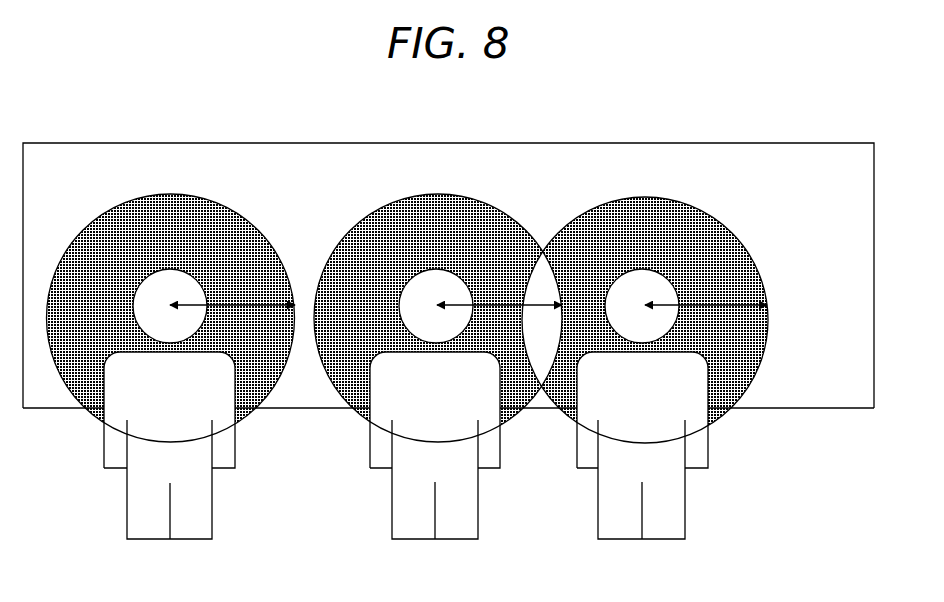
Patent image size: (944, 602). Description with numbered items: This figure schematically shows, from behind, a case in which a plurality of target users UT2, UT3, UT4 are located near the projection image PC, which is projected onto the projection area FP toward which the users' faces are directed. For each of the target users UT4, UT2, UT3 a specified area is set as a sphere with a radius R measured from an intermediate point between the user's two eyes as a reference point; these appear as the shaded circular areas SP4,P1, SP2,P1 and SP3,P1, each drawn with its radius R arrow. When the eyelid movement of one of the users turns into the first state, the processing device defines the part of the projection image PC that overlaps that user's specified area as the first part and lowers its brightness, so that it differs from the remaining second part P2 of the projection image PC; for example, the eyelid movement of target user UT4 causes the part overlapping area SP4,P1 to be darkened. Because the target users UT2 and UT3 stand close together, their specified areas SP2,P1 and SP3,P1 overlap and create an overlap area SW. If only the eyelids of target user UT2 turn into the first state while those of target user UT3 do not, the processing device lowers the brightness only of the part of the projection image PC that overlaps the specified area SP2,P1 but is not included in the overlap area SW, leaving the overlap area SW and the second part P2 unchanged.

The specified area of target user UT4 defined as first part SP4,P1 is at (163, 217).
The specified area of target user UT2 defined as first part SP2,P1 is at (453, 217).
The specified area of target user UT3 defined as first part SP3,P1 is at (648, 217).
The overlap area SW is at (542, 273).
The second part P2 is at (792, 220).
The projection image PC is at (805, 387).
The projection area FP is at (753, 410).
The radius R is at (468, 290).
The target user UT4 is at (196, 518).
The target user UT2 is at (458, 520).
The target user UT3 is at (668, 523).